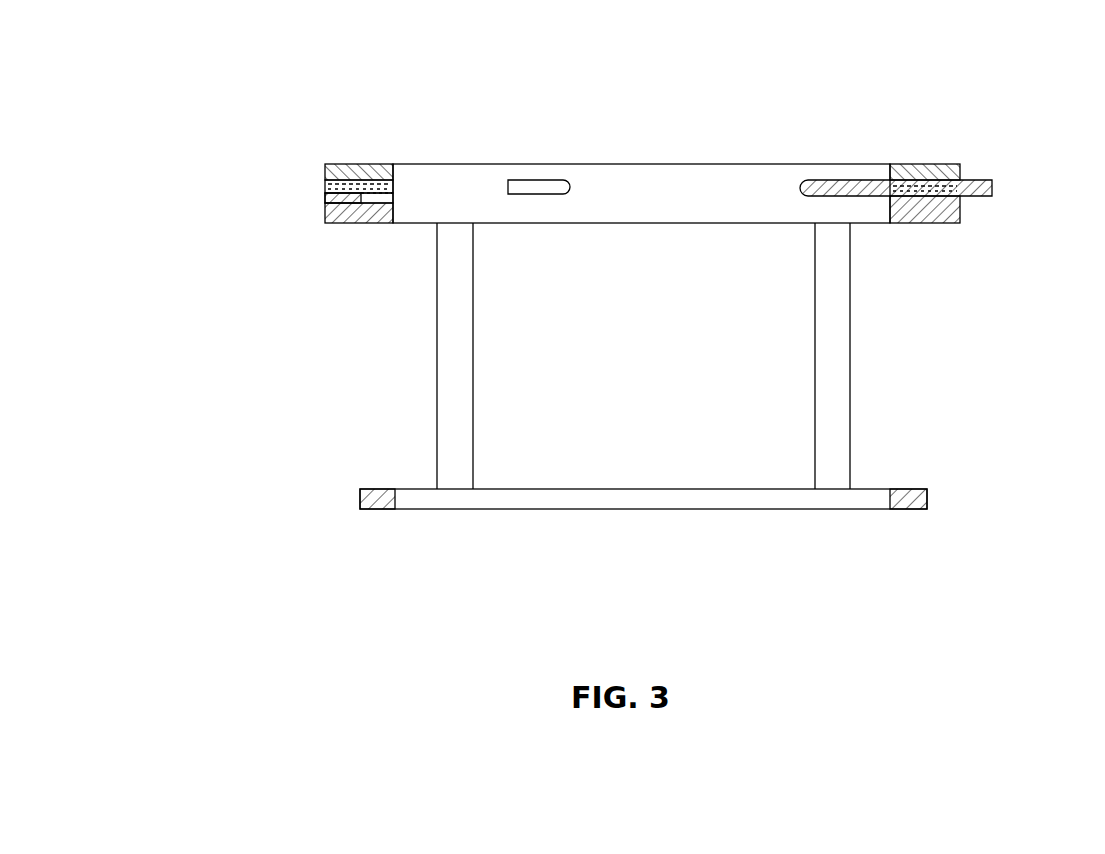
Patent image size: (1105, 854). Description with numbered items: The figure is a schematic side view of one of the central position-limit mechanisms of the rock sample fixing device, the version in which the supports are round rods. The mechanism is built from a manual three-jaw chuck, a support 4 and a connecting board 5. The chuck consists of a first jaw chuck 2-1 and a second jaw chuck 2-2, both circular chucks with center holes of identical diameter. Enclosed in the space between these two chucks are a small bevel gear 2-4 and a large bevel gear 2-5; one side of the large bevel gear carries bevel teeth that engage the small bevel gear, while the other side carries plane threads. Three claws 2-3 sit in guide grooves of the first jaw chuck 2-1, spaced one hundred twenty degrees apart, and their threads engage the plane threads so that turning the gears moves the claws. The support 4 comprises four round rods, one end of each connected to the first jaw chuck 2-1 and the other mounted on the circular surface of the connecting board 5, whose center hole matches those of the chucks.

The first jaw chuck 2-1 is at (905, 168).
The second jaw chuck 2-2 is at (918, 218).
The claws 2-3 is at (543, 185).
The small bevel gear 2-4 is at (322, 212).
The large bevel gear 2-5 is at (325, 192).
The support 4 is at (457, 281).
The connecting board 5 is at (357, 490).